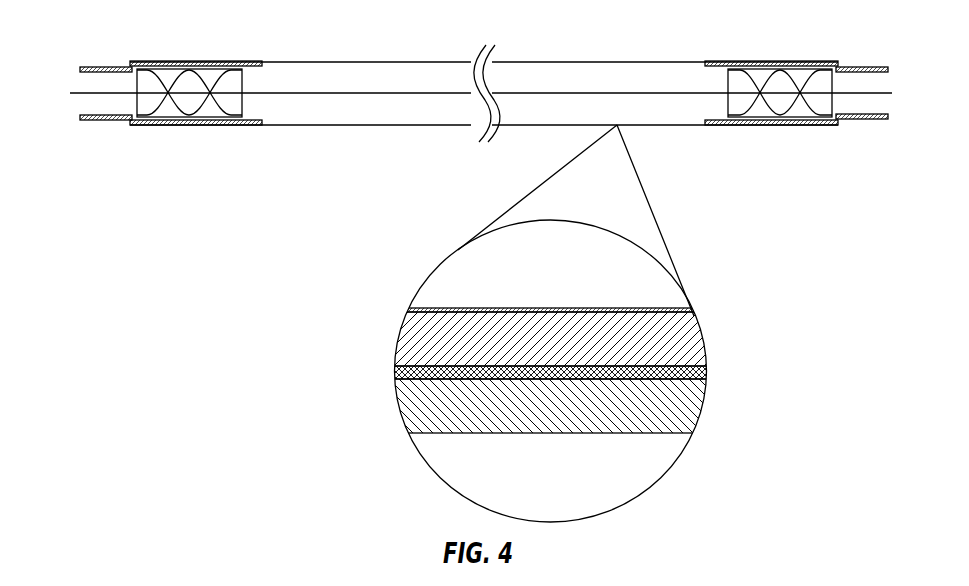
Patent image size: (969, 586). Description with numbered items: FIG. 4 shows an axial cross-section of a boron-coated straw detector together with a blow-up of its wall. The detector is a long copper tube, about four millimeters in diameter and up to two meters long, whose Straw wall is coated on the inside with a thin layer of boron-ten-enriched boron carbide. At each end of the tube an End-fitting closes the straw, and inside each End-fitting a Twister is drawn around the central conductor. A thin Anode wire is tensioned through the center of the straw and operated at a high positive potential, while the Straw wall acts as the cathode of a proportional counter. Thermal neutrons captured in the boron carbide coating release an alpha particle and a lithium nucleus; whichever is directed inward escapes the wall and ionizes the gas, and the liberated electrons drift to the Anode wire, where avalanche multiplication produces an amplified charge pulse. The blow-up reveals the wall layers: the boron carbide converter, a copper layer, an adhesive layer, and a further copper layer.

The twister Twister is at (225, 78).
The end-fitting End-fitting is at (215, 130).
The straw wall Straw wall is at (418, 129).
The anode wire Anode wire is at (568, 88).